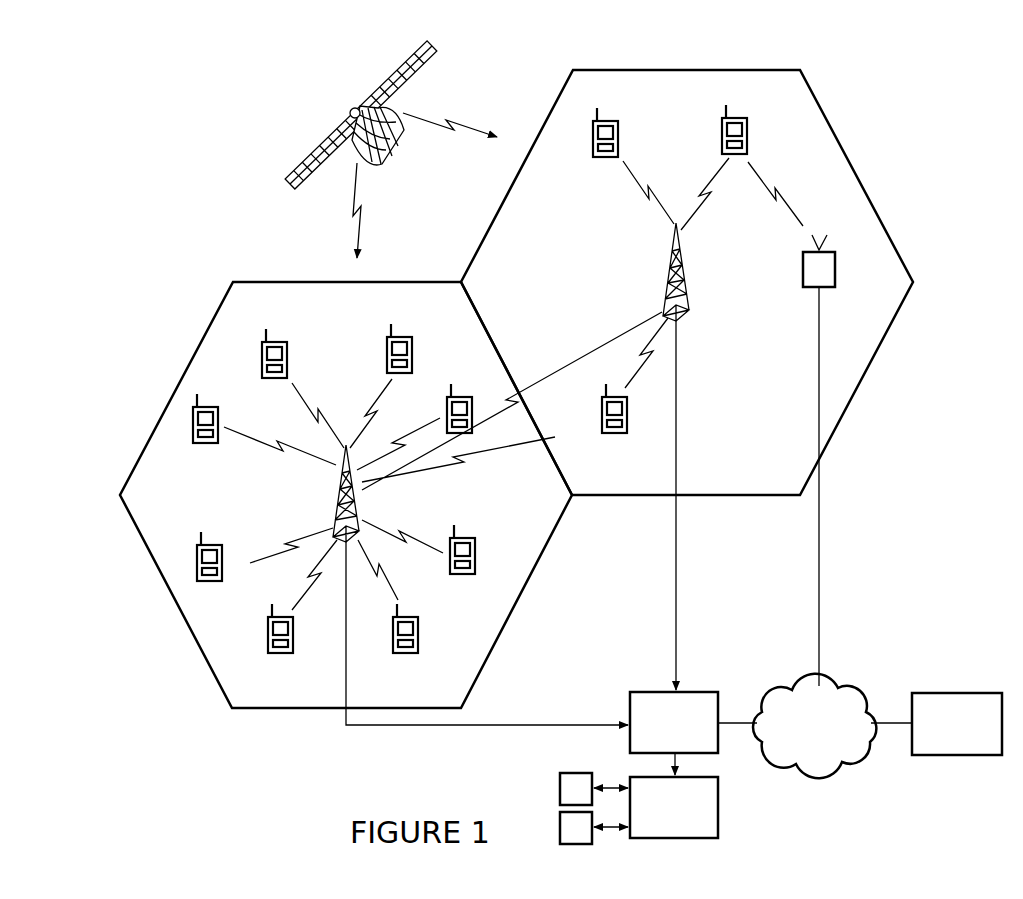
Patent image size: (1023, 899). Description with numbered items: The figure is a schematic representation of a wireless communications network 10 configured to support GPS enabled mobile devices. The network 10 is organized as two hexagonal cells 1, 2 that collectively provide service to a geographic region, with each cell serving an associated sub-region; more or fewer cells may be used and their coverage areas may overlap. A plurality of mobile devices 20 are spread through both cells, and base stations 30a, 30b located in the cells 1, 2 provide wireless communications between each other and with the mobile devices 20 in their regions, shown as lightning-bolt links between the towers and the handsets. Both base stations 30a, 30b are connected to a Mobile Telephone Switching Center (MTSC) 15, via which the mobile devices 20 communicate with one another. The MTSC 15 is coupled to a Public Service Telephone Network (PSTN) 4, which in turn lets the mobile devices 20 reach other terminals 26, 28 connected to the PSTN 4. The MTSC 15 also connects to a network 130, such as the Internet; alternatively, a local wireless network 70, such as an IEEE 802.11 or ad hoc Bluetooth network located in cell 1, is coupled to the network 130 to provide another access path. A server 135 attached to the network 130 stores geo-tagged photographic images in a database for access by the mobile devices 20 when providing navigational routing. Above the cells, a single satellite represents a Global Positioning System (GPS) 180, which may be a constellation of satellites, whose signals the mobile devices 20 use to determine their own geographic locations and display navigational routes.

The cell 1 is at (878, 366).
The cell 2 is at (206, 660).
The Public Service Telephone Network (PSTN) 4 is at (667, 834).
The wireless communications network 10 is at (950, 152).
The Mobile Telephone Switching Center (MTSC) 15 is at (661, 749).
The mobile device 20 is at (618, 135).
The terminal 26 is at (565, 840).
The terminal 28 is at (565, 801).
The base station 30a is at (670, 272).
The base station 30b is at (340, 497).
The local wireless network 70 is at (830, 281).
The network 130 is at (799, 737).
The server 135 is at (939, 737).
The Global Positioning System (GPS) 180 is at (355, 108).